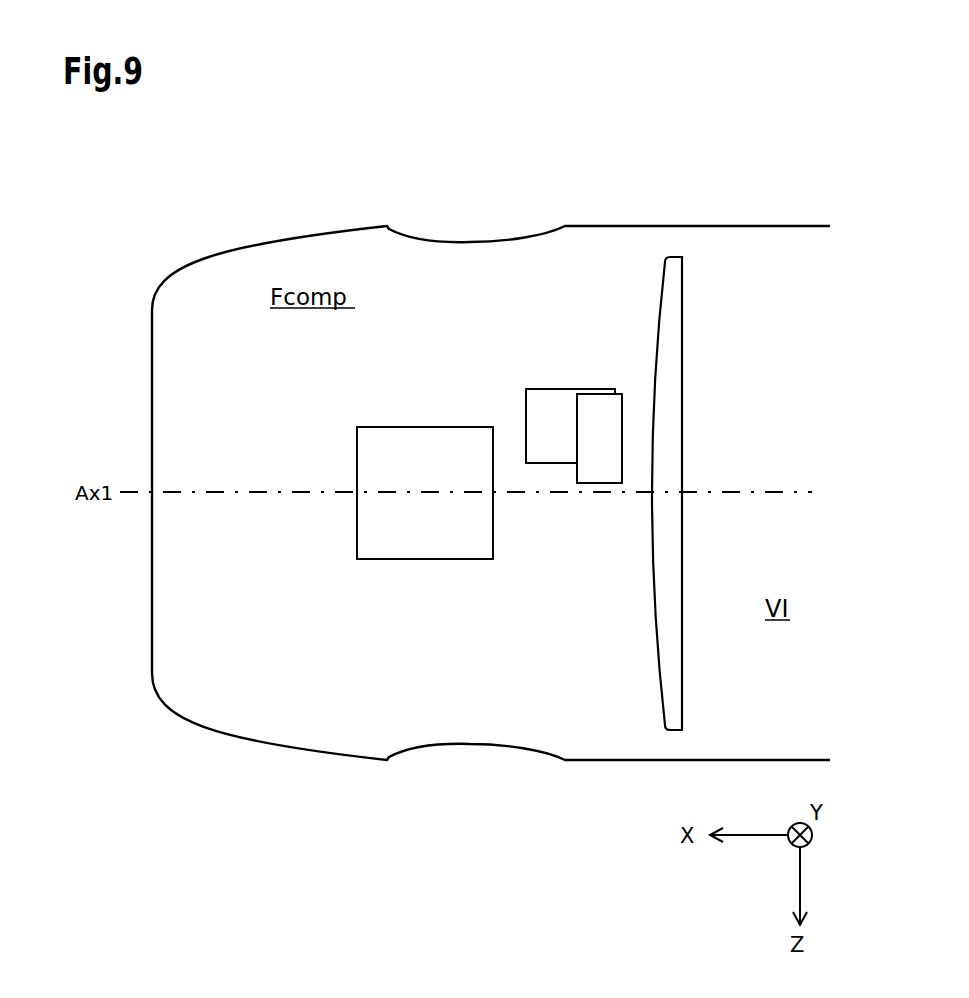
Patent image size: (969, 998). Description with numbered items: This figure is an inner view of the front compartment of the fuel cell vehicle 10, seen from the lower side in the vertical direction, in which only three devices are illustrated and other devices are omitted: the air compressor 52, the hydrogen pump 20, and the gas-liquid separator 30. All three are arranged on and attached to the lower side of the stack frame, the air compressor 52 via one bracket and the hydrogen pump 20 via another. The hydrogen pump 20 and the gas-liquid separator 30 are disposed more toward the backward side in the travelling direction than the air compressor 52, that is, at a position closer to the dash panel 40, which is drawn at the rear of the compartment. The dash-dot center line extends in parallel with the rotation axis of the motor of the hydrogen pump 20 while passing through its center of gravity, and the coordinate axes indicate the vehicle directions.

The fuel cell vehicle 10 is at (299, 208).
The hydrogen pump 20 is at (572, 388).
The gas-liquid separator 30 is at (600, 483).
The dash panel 40 is at (682, 445).
The air compressor 52 is at (415, 427).